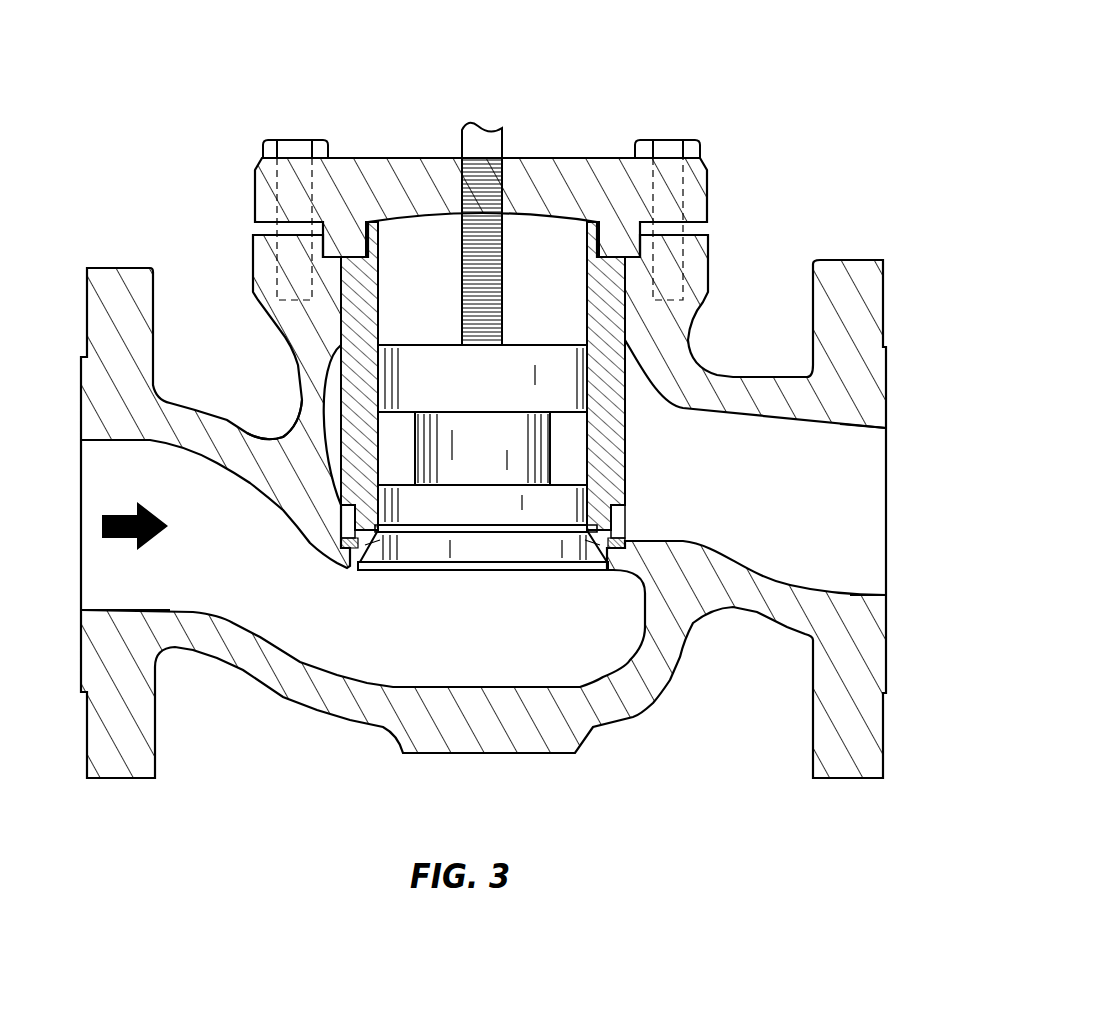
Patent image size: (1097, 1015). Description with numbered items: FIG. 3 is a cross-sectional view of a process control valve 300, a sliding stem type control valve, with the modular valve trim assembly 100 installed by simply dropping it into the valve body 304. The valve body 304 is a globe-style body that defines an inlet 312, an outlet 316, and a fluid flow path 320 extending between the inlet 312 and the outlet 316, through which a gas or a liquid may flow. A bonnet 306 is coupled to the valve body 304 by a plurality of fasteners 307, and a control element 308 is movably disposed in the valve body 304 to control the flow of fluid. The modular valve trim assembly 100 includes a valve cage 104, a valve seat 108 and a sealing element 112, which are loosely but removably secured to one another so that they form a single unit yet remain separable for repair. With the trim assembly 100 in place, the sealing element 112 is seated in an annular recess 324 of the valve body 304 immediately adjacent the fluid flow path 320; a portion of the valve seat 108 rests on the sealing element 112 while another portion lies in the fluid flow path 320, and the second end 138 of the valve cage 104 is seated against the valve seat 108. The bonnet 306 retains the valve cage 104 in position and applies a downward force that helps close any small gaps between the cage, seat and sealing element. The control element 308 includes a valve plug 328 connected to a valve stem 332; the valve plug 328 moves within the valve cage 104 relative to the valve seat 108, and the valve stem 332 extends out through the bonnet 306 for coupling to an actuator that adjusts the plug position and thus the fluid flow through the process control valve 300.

The process control valve 300 is at (683, 60).
The valve body 304 is at (643, 716).
The bonnet 306 is at (700, 205).
The fasteners 307 is at (292, 140).
The control element 308 is at (519, 324).
The inlet 312 is at (80, 497).
The outlet 316 is at (890, 508).
The fluid flow path 320 is at (475, 633).
The annular recess 324 is at (347, 548).
The sealing element 112 is at (483, 543).
The valve plug 328 is at (538, 384).
The valve stem 332 is at (488, 128).
The modular valve trim assembly 100 is at (352, 234).
The valve cage 104 is at (360, 380).
The valve seat 108 is at (395, 548).
The second end 138 is at (335, 440).